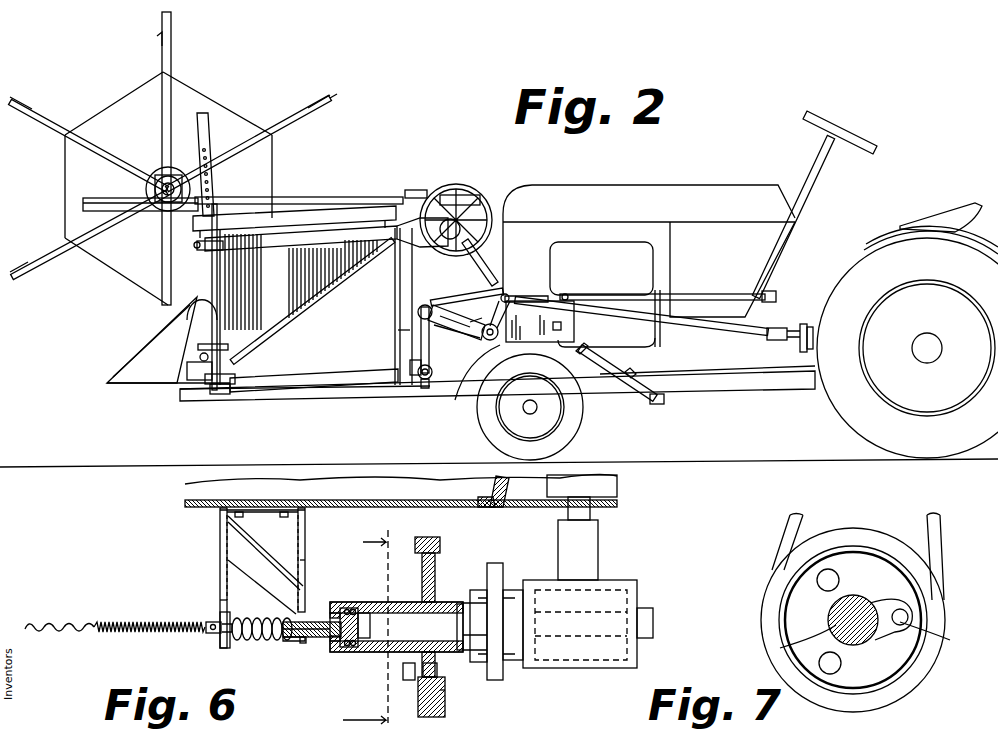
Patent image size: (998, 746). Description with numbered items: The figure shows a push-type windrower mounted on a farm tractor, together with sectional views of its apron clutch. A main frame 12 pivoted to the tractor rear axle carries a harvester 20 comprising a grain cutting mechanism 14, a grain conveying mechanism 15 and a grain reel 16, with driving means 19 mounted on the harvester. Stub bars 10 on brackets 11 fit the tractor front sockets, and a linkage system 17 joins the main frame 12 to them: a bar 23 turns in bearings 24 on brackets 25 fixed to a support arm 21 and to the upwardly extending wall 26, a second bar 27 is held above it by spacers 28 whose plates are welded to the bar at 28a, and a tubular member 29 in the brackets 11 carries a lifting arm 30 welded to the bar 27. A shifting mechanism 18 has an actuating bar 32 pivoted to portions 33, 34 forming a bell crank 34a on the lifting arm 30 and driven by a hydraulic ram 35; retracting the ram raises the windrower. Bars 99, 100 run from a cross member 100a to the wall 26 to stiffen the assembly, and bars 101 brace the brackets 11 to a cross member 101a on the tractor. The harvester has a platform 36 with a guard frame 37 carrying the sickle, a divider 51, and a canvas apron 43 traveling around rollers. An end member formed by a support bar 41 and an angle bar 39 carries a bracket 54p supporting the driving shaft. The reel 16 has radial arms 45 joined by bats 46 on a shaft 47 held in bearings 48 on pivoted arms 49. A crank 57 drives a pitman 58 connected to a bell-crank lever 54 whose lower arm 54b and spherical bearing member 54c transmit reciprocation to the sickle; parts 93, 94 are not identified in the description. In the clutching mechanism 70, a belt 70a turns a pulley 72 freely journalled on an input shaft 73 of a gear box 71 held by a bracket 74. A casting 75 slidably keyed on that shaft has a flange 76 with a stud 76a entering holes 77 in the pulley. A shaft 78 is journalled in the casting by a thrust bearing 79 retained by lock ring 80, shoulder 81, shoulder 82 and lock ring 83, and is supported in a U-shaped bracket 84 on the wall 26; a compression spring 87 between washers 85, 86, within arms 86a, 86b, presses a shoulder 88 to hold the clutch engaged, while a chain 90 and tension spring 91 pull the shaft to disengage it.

In FIG. 2, the stub bars 10 is at (427, 285).
In FIG. 2, the brackets 11 is at (408, 318).
In FIG. 2, the main frame 12 is at (772, 396).
In FIG. 2, the grain cutting mechanism 14 is at (182, 396).
In FIG. 2, the grain conveying mechanism 15 is at (386, 348).
In FIG. 2, the grain reel 16 is at (236, 92).
In FIG. 2, the linkage system 17 is at (508, 292).
In FIG. 2, the shifting mechanism 18 is at (722, 332).
In FIG. 2, the driving means 19 is at (450, 185).
In FIG. 2, the harvester 20 is at (342, 116).
In FIG. 2, the support arm 21 is at (718, 392).
In FIG. 2, the bar 23 is at (432, 367).
In FIG. 2, the bearings 24 is at (433, 373).
In FIG. 2, the brackets 25 is at (422, 388).
In FIG. 2, the upwardly extending wall 26 is at (420, 312).
In FIG. 6, the upwardly extending wall 26 is at (390, 502).
In FIG. 2, the second bar 27 is at (425, 305).
In FIG. 2, the spacer links 28 is at (456, 329).
In FIG. 2, the plate securing point 28a is at (424, 336).
In FIG. 2, the tubular member 29 is at (492, 345).
In FIG. 2, the lifting arm 30 is at (480, 332).
In FIG. 2, the actuating bar 32 is at (772, 328).
In FIG. 2, the bell crank portion 33 is at (472, 304).
In FIG. 2, the bell crank portion 34 is at (540, 321).
In FIG. 2, the bell crank 34a is at (471, 385).
In FIG. 2, the hydraulic ram 35 is at (815, 334).
In FIG. 2, the platform 36 is at (360, 396).
In FIG. 2, the guard frame 37 is at (218, 394).
In FIG. 2, the angle bar 39 is at (314, 212).
In FIG. 2, the support bar 41 is at (210, 150).
In FIG. 2, the canvas apron 43 is at (276, 375).
In FIG. 2, the radially arranged arms 45 is at (108, 156).
In FIG. 2, the bats 46 is at (158, 38).
In FIG. 2, the shaft 47 is at (162, 180).
In FIG. 2, the bearings 48 is at (160, 189).
In FIG. 2, the arms 49 is at (135, 212).
In FIG. 2, the divider 51 is at (122, 360).
In FIG. 2, the bell-crank lever 54 is at (210, 274).
In FIG. 2, the bell crank arm 54b is at (207, 343).
In FIG. 2, the spherical bearing member 54c is at (199, 249).
In FIG. 2, the bracket 54p is at (420, 190).
In FIG. 2, the crank 57 is at (428, 234).
In FIG. 2, the pitman 58 is at (384, 256).
In FIG. 6, the clutching mechanism 70 is at (302, 684).
In FIG. 6, the belt 70a is at (430, 538).
In FIG. 7, the belt 70a is at (938, 535).
In FIG. 6, the gear box 71 is at (606, 666).
In FIG. 6, the pulley 72 is at (436, 545).
In FIG. 7, the pulley 72 is at (770, 596).
In FIG. 6, the input shaft 73 is at (444, 620).
In FIG. 7, the input shaft 73 is at (780, 648).
In FIG. 6, the bracket 74 is at (484, 540).
In FIG. 6, the casting 75 is at (378, 652).
In FIG. 7, the casting 75 is at (830, 612).
In FIG. 6, the flange 76 is at (403, 676).
In FIG. 7, the flange 76 is at (880, 600).
In FIG. 6, the stud 76a is at (440, 676).
In FIG. 7, the stud 76a is at (905, 628).
In FIG. 6, the holes 77 is at (444, 690).
In FIG. 7, the holes 77 is at (829, 569).
In FIG. 6, the shaft 78 is at (307, 659).
In FIG. 6, the anti-friction thrust bearing 79 is at (328, 652).
In FIG. 6, the lock ring 80 is at (366, 612).
In FIG. 6, the shoulder 81 is at (332, 612).
In FIG. 6, the shoulder 82 is at (352, 608).
In FIG. 6, the lock ring 83 is at (312, 660).
In FIG. 6, the U-shaped bracket 84 is at (219, 556).
In FIG. 6, the washer 85 is at (285, 646).
In FIG. 6, the washer 86 is at (230, 646).
In FIG. 6, the arm 86a is at (221, 602).
In FIG. 6, the arm 86b is at (302, 570).
In FIG. 6, the compression spring 87 is at (240, 594).
In FIG. 6, the shoulder 88 is at (283, 610).
In FIG. 6, the chain 90 is at (56, 630).
In FIG. 6, the tension spring 91 is at (154, 634).
In FIG. 2, the drive shaft 93 is at (498, 252).
In FIG. 2, the pulley hub 94 is at (450, 195).
In FIG. 2, the bar 99 is at (640, 384).
In FIG. 2, the bar 100 is at (620, 386).
In FIG. 2, the cross member 100a is at (658, 396).
In FIG. 2, the bars 101 is at (726, 296).
In FIG. 2, the cross member 101a is at (778, 296).